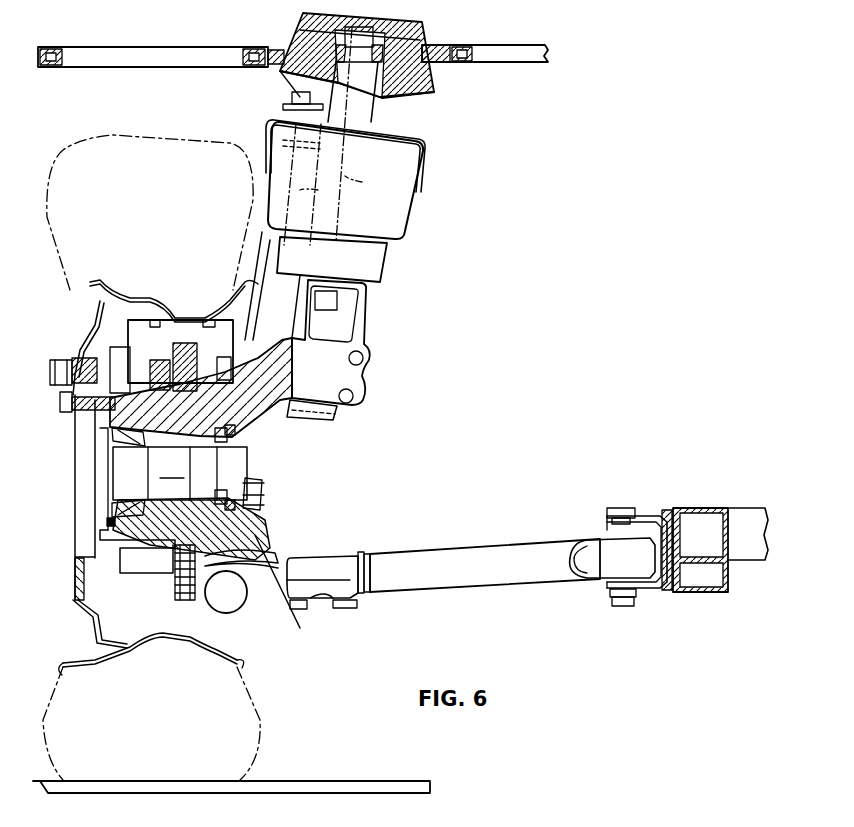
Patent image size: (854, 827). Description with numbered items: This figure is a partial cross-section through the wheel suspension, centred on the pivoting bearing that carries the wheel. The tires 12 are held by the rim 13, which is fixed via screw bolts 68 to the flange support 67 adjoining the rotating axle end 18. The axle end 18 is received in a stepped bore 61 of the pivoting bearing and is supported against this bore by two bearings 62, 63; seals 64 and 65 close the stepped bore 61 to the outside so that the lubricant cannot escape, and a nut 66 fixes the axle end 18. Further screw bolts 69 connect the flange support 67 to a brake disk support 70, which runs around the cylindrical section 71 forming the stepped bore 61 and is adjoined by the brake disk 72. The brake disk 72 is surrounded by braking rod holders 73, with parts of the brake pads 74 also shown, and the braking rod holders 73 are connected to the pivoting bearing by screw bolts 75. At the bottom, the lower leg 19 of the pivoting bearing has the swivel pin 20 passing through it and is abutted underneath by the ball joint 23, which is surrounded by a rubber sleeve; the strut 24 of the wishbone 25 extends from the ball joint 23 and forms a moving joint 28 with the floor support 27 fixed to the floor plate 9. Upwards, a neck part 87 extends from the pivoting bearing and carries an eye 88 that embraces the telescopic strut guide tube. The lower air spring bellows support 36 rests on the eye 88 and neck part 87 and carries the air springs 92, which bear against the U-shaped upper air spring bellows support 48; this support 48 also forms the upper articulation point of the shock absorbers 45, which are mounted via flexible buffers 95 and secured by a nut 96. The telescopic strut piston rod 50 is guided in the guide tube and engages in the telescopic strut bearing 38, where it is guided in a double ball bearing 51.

The floor plate 9 is at (663, 513).
The tires 12 is at (228, 690).
The rim 13 is at (80, 618).
The rotating axle end 18 is at (180, 473).
The lower leg 19 is at (253, 537).
The swivel pin 20 is at (265, 522).
The ball joint 23 is at (238, 598).
The strut 24 is at (522, 555).
The wishbone 25 is at (469, 587).
The floor support 27 is at (697, 520).
The moving joint 28 is at (609, 511).
The lower air spring bellows support 36 is at (355, 303).
The telescopic strut bearing 38 is at (418, 80).
The shock absorbers 45 is at (268, 252).
The upper air spring bellows support 48 is at (425, 150).
The telescopic strut piston rod 50 is at (357, 100).
The double ball bearing 51 is at (430, 68).
The stepped bore 61 is at (162, 510).
The bearing 62 is at (130, 517).
The bearing 63 is at (230, 437).
The seal 64 is at (108, 525).
The seal 65 is at (248, 498).
The nut 66 is at (235, 452).
The flange support 67 is at (72, 397).
The screw bolts 68 is at (85, 365).
The screw bolts 69 is at (85, 405).
The brake disk support 70 is at (130, 413).
The cylindrical section 71 is at (275, 610).
The brake disk 72 is at (175, 597).
The braking rod holders 73 is at (168, 330).
The brake pads 74 is at (140, 375).
The screw bolts 75 is at (265, 373).
The neck part 87 is at (300, 352).
The eye 88 is at (354, 394).
The air springs 92 is at (400, 186).
The flexible buffer 95 is at (292, 107).
The nut 96 is at (300, 96).